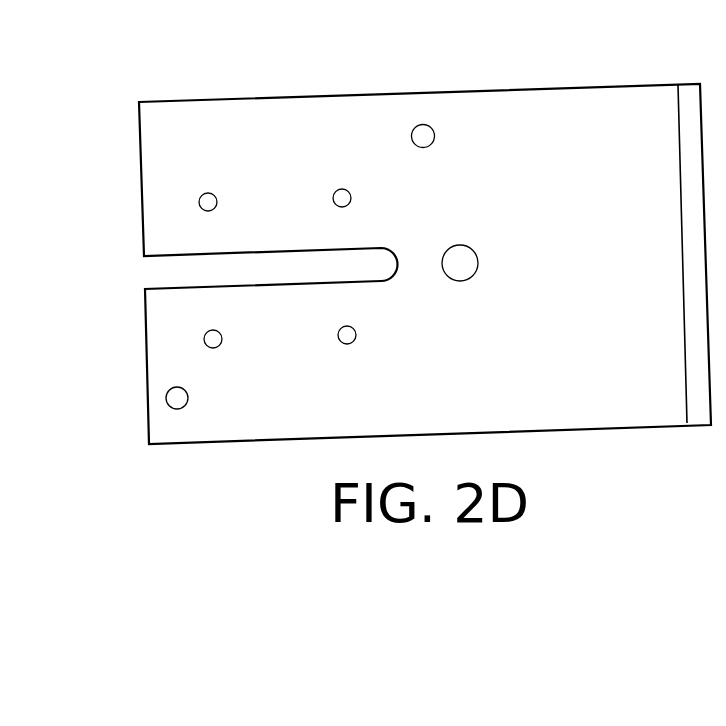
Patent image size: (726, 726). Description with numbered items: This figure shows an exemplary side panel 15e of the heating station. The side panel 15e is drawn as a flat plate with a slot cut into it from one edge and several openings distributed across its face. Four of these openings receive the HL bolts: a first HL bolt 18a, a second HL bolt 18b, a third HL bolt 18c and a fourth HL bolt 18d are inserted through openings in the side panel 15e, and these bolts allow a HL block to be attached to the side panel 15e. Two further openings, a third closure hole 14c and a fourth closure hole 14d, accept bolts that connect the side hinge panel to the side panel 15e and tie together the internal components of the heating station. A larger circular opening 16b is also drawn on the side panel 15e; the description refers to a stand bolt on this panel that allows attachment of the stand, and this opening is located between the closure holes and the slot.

The side panel 15e is at (238, 106).
The first HL bolt 18a is at (216, 348).
The second HL bolt 18b is at (212, 211).
The third HL bolt 18c is at (351, 343).
The fourth HL bolt 18d is at (337, 191).
The third closure hole 14c is at (181, 409).
The fourth closure hole 14d is at (427, 147).
The hole 16b is at (466, 280).